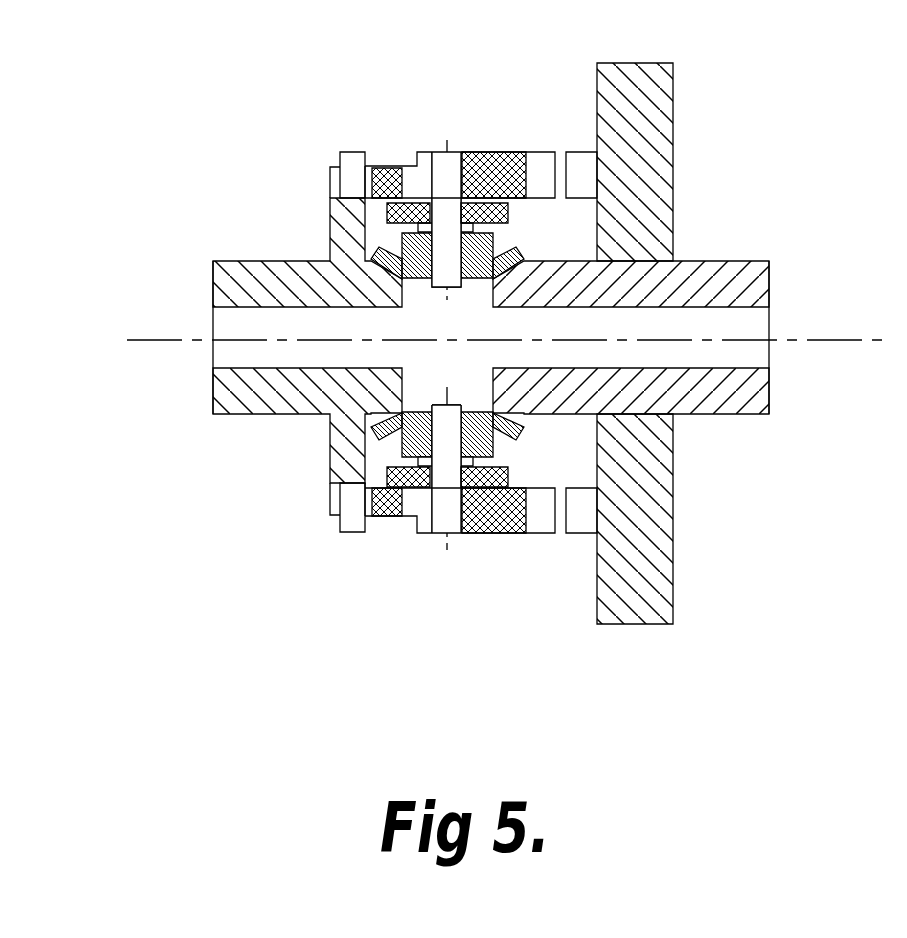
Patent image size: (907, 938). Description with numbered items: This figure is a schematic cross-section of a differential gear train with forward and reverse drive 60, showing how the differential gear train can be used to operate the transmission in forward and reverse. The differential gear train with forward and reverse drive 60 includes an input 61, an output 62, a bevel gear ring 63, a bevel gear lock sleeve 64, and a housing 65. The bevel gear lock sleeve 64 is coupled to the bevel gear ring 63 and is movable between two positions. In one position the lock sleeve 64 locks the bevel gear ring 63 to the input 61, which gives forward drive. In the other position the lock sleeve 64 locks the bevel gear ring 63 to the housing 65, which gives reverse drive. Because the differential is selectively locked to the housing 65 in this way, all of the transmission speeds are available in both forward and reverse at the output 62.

The differential gear train with forward and reverse drive 60 is at (469, 318).
The input 61 is at (283, 390).
The output 62 is at (680, 392).
The bevel gear ring 63 is at (487, 207).
The bevel gear lock sleeve 64 is at (383, 177).
The housing 65 is at (632, 198).